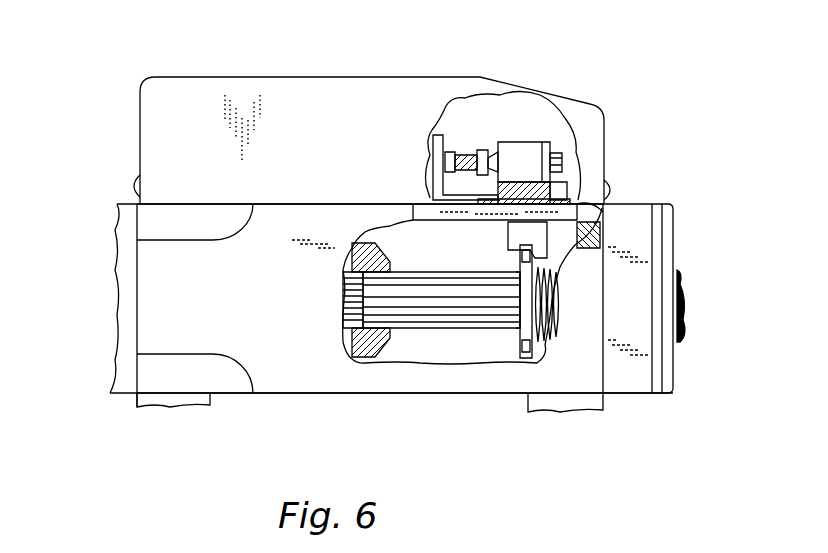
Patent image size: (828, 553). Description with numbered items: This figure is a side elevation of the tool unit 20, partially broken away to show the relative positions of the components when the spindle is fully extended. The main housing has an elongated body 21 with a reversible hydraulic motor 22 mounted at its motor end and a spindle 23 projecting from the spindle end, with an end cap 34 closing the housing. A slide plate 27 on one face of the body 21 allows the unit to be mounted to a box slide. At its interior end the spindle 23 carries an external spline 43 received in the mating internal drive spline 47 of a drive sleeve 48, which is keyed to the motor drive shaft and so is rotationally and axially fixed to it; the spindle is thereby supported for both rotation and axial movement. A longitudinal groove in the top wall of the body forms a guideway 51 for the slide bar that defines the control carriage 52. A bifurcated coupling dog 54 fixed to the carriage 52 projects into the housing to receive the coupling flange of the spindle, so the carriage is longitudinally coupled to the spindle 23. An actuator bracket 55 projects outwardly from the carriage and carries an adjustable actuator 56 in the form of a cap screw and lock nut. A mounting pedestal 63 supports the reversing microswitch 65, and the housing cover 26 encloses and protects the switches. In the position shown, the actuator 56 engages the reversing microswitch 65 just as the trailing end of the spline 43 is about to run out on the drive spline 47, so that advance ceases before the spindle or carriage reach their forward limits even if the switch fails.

The tool unit 20 is at (566, 91).
The elongated body 21 is at (224, 300).
The reversible hydraulic motor 22 is at (122, 268).
The spindle 23 is at (684, 284).
The housing cover 26 is at (348, 92).
The slide plate 27 is at (208, 403).
The end cap 34 is at (622, 385).
The external spline 43 is at (448, 283).
The internal drive spline 47 is at (352, 302).
The drive sleeve 48 is at (366, 257).
The guideway 51 is at (606, 207).
The control carriage 52 is at (432, 214).
The bifurcated coupling dog 54 is at (518, 240).
The actuator bracket 55 is at (436, 148).
The adjustable actuator 56 is at (460, 160).
The mounting pedestal 63 is at (498, 190).
The reversing microswitch 65 is at (514, 145).